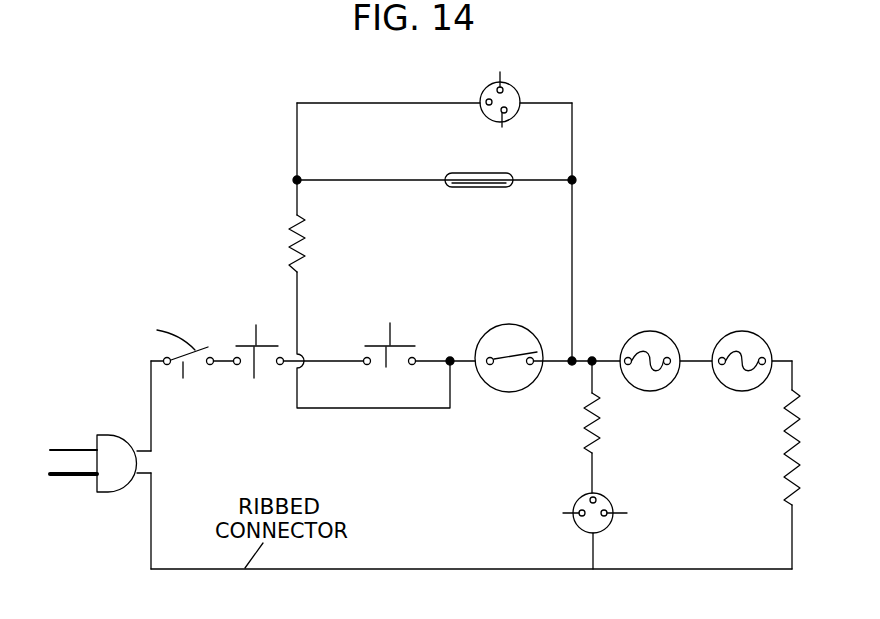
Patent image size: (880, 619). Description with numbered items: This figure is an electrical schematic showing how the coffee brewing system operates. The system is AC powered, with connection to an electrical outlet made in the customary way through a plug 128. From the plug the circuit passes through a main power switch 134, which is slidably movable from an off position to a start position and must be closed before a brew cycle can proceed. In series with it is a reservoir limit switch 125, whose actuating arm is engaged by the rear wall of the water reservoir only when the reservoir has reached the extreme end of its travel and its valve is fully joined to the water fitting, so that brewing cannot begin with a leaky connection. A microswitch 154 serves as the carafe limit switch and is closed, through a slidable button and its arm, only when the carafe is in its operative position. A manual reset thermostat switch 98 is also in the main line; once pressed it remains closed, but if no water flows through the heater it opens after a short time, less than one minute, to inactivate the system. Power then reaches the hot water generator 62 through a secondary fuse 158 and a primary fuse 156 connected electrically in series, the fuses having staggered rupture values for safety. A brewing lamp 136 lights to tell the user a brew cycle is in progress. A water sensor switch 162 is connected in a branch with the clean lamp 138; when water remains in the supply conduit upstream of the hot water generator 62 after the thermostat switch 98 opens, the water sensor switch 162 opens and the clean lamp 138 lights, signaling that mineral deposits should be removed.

The plug 128 is at (110, 492).
The main power switch 134 is at (142, 344).
The limit switch 125 is at (250, 331).
The clean lamp 138 is at (520, 89).
The water sensor switch 162 is at (470, 172).
The microswitch 154 is at (383, 325).
The thermostat switch 98 is at (500, 363).
The secondary fuse 158 is at (666, 388).
The primary fuse 156 is at (760, 389).
The hot water generator 62 is at (793, 486).
The brewing lamp 136 is at (613, 519).